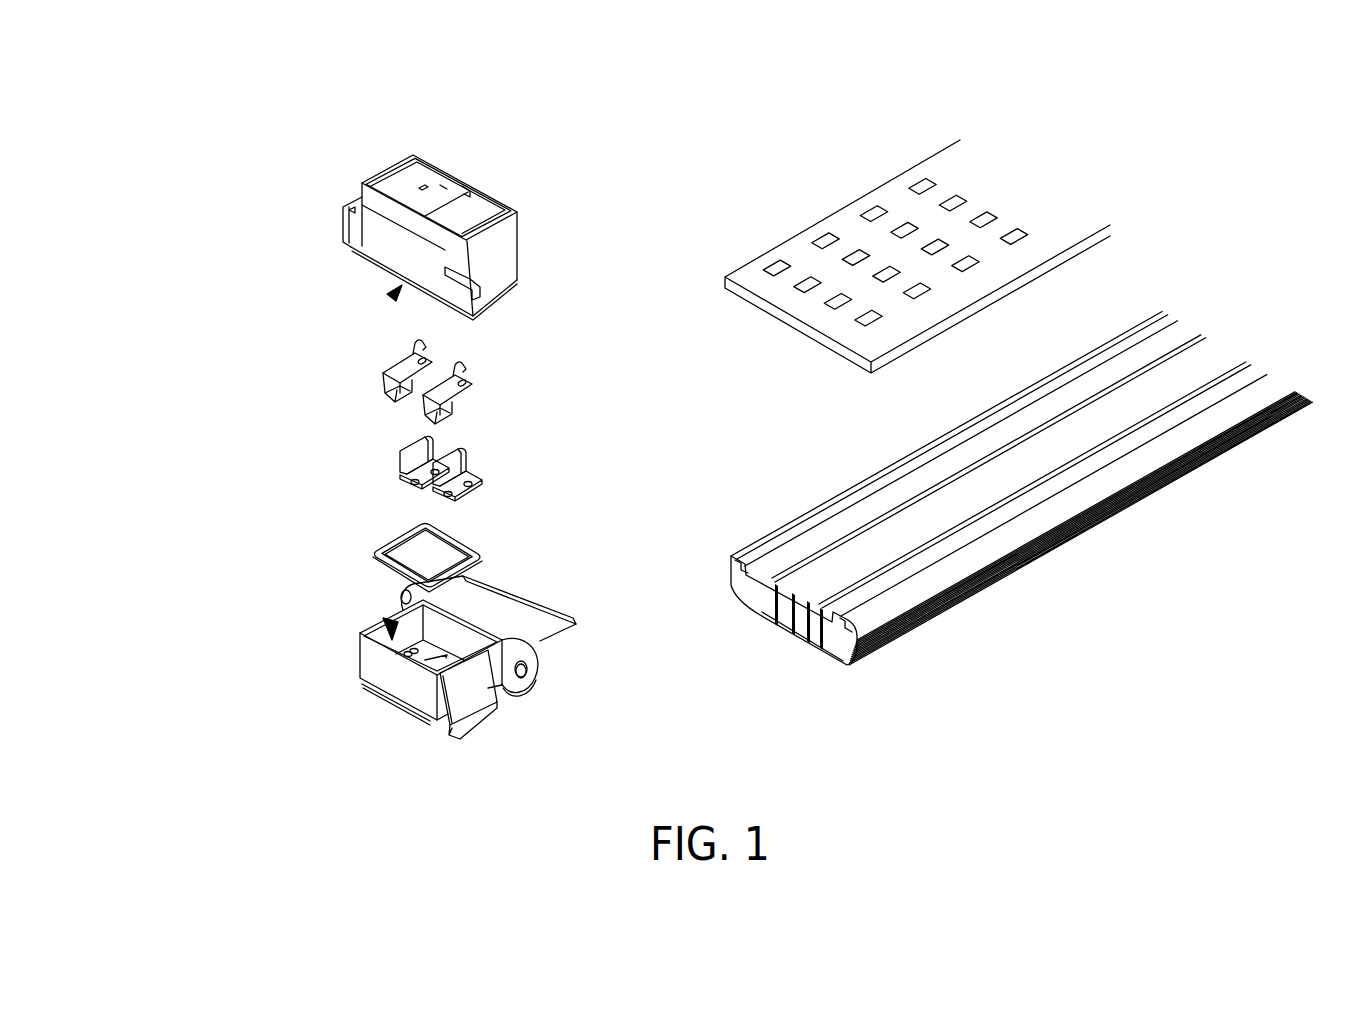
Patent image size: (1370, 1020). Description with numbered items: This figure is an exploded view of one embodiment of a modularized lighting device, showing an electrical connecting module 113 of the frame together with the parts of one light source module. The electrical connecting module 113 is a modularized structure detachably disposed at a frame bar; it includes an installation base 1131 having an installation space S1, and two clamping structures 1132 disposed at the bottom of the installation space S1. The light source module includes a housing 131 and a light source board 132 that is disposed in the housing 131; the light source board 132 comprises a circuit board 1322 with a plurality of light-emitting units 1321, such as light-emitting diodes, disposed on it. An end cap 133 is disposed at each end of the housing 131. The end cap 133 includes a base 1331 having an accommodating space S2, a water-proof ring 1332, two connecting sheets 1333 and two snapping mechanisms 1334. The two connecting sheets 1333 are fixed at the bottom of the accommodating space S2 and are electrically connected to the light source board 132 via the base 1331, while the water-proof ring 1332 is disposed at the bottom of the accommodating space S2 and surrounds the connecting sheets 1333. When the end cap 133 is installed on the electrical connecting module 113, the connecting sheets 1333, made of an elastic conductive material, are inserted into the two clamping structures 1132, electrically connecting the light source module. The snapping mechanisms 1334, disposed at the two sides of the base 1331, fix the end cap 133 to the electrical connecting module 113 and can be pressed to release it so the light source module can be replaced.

The electrical connecting module 113 is at (253, 299).
The installation base 1131 is at (390, 258).
The clamping structure 1132 is at (387, 388).
The installation space S1 is at (392, 298).
The end cap 133 is at (273, 500).
The base 1331 is at (515, 605).
The water-proof ring 1332 is at (483, 558).
The connecting sheet 1333 is at (437, 448).
The snapping mechanism 1334 is at (363, 672).
The accommodating space S2 is at (388, 618).
The housing 131 is at (838, 533).
The light source board 132 is at (998, 153).
The light-emitting unit 1321 is at (880, 207).
The circuit board 1322 is at (797, 248).